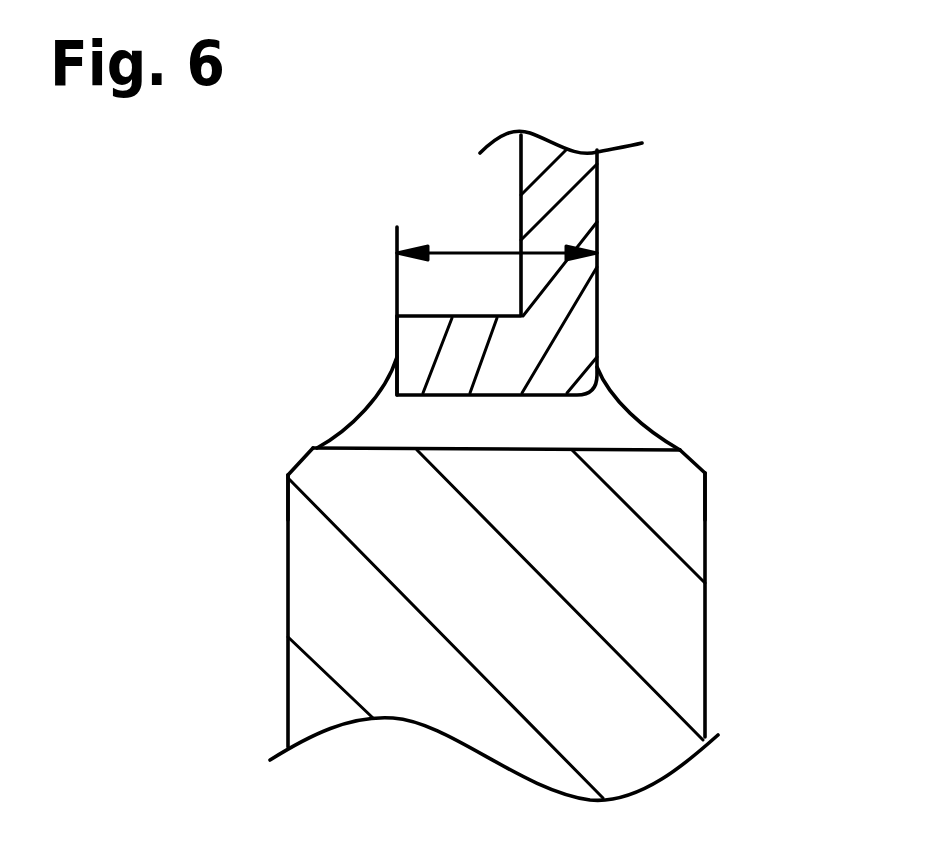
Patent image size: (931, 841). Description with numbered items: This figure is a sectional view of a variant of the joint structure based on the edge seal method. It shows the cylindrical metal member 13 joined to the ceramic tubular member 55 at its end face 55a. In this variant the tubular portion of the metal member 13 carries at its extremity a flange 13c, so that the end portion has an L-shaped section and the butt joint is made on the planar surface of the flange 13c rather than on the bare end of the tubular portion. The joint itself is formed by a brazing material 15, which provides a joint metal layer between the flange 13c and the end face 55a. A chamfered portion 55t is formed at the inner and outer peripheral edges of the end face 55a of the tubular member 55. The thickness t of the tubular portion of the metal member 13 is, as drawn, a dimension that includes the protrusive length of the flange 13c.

The metal member 13 is at (582, 207).
The flange 13c is at (397, 342).
The brazing material 15 is at (592, 413).
The tubular member 55 is at (678, 673).
The end face 55a is at (625, 448).
The chamfered portion 55t is at (288, 470).
The thickness t is at (497, 230).